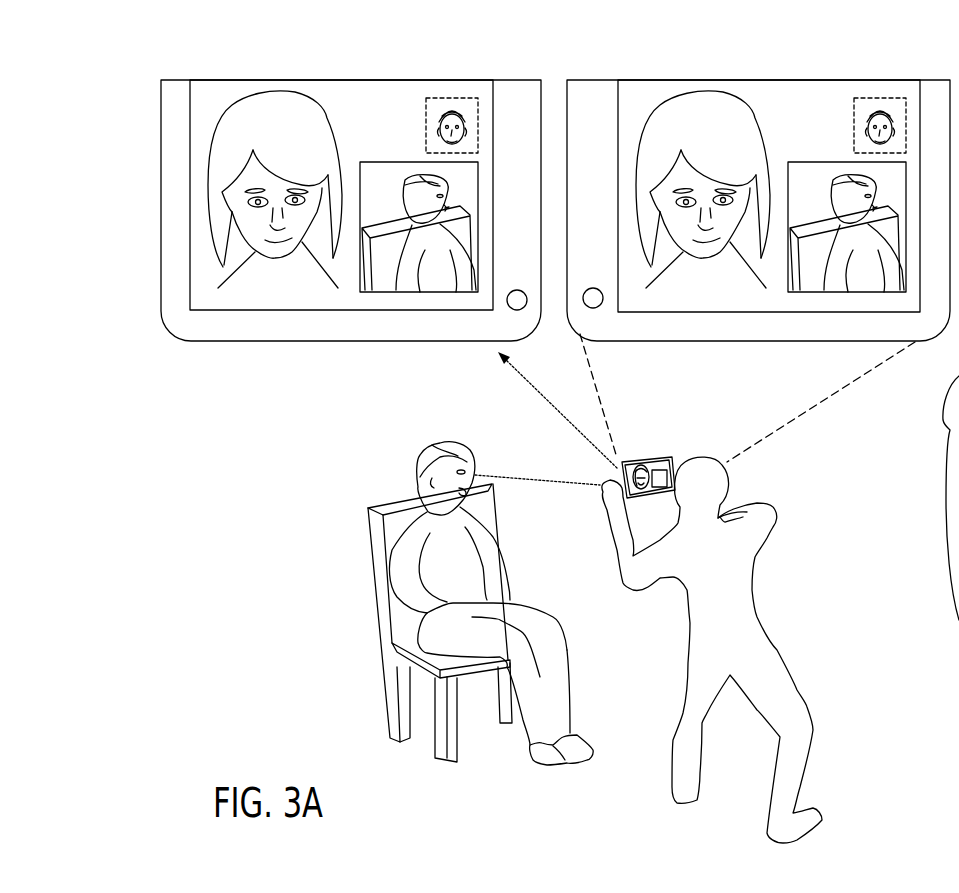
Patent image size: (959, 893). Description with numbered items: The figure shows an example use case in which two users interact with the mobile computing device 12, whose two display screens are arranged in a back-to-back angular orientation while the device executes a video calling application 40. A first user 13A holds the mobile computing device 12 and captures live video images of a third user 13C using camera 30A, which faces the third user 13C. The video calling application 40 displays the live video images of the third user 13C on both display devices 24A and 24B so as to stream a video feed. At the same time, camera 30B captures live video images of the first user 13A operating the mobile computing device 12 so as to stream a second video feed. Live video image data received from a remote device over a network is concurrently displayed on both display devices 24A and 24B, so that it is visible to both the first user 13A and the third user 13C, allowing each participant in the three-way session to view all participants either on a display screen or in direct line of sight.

The mobile computing device 12 is at (420, 342).
The video calling application 40 is at (555, 288).
The display device 24A is at (394, 101).
The display device 24B is at (829, 101).
The camera 30A is at (519, 310).
The camera 30B is at (594, 308).
The first user 13A is at (760, 492).
The third user 13C is at (438, 443).